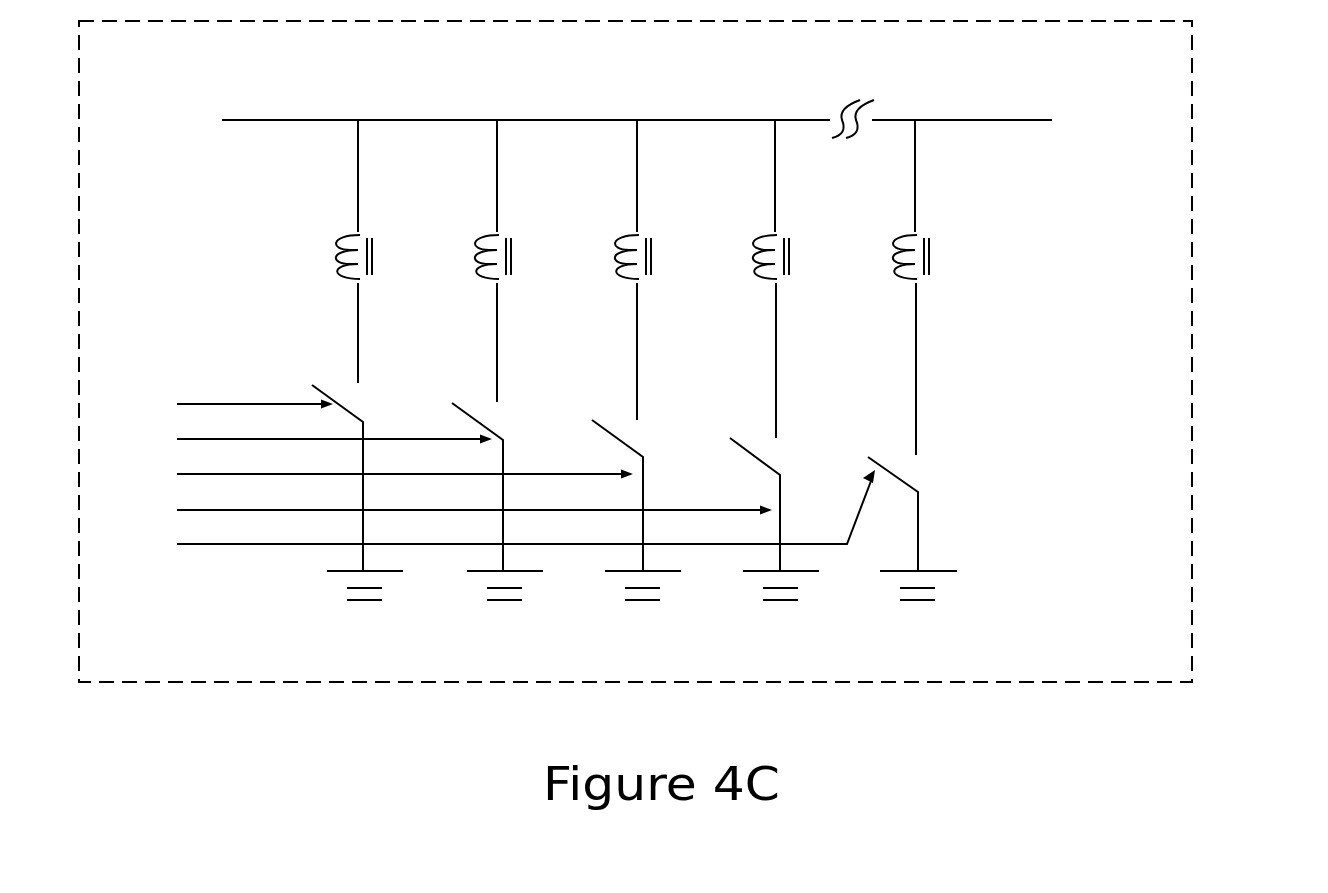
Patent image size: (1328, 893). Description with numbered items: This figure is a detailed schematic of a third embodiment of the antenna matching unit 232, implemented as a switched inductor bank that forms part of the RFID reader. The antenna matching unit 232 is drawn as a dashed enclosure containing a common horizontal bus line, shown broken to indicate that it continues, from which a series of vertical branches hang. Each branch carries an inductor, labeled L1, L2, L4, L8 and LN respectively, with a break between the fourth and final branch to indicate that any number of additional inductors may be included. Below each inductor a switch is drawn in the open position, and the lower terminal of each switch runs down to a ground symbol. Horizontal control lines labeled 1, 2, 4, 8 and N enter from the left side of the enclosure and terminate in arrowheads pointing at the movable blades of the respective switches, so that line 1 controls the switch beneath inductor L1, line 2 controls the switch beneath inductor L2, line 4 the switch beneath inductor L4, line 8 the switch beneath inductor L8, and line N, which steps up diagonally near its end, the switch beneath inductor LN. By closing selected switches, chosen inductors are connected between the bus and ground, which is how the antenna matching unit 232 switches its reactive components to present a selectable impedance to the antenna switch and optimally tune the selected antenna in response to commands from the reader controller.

The antenna matching unit 232 is at (694, 351).
The inductor L1 is at (373, 251).
The inductor L2 is at (512, 261).
The inductor L4 is at (652, 270).
The inductor L8 is at (790, 279).
The inductor LN is at (931, 287).
The switch control line 1 is at (255, 392).
The switch control line 2 is at (334, 427).
The switch control line 4 is at (405, 462).
The switch control line 8 is at (474, 498).
The switch control line N is at (525, 510).